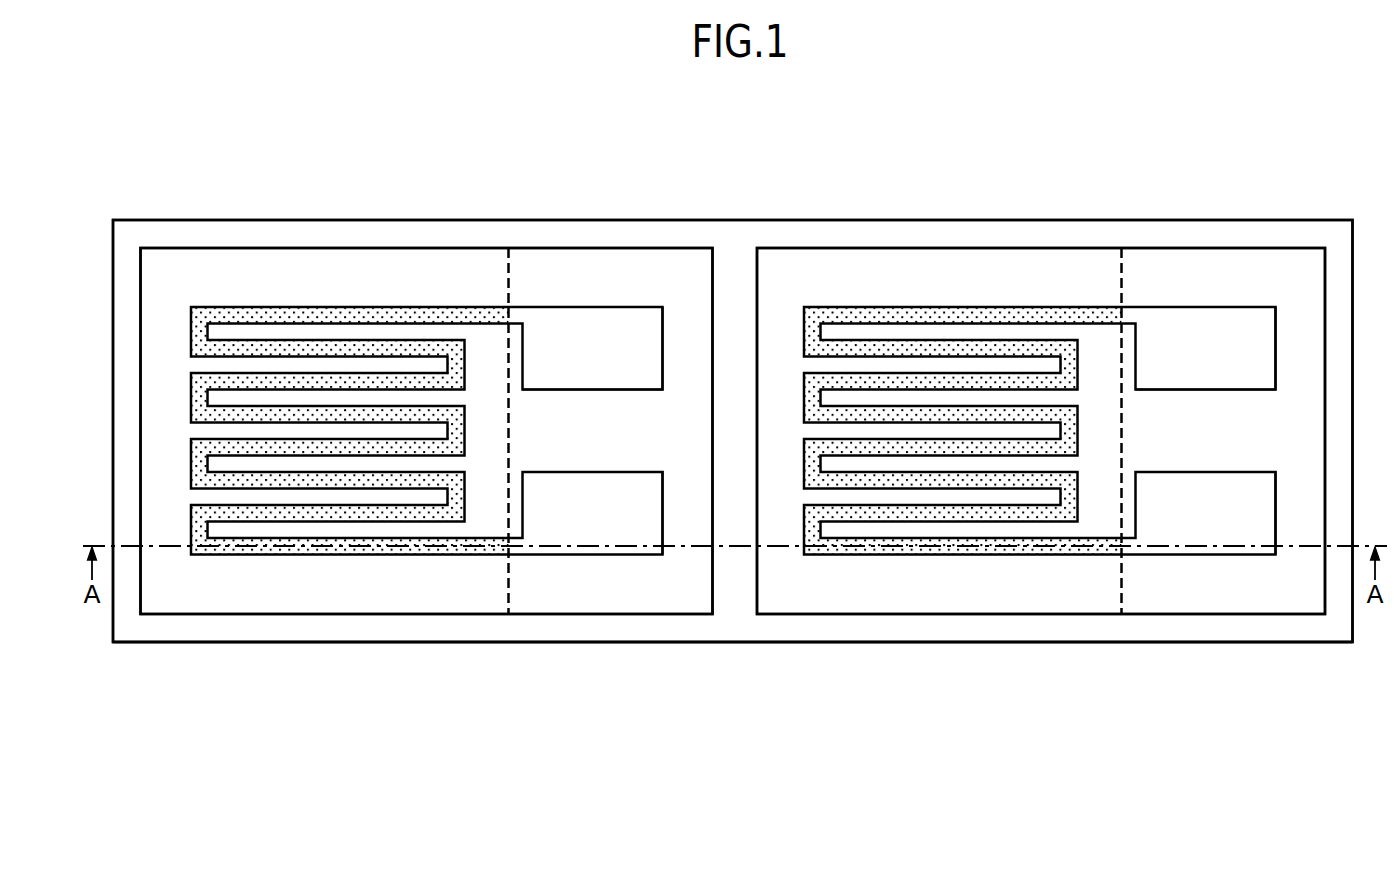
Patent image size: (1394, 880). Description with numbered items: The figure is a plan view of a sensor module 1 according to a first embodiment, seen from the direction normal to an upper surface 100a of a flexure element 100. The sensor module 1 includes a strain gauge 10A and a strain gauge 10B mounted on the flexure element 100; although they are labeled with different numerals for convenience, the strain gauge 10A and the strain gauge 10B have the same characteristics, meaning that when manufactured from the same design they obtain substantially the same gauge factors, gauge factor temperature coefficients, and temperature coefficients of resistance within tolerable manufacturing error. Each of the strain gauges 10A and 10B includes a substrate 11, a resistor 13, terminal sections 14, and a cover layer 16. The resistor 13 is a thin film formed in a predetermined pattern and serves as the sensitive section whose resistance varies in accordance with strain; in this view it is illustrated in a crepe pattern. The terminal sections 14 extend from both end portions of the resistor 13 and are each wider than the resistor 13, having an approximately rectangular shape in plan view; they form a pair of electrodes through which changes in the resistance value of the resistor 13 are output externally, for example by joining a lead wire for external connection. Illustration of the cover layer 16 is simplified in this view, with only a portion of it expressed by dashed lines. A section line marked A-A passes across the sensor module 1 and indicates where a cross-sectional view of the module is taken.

The sensor module 1 is at (88, 160).
The strain gauge 10A is at (643, 246).
The strain gauge 10B is at (1256, 246).
The substrate 11 is at (186, 268).
The resistor 13 is at (339, 314).
The terminal sections 14 is at (594, 352).
The cover layer 16 is at (507, 277).
The flexure element 100 is at (732, 642).
The upper surface 100a is at (945, 628).